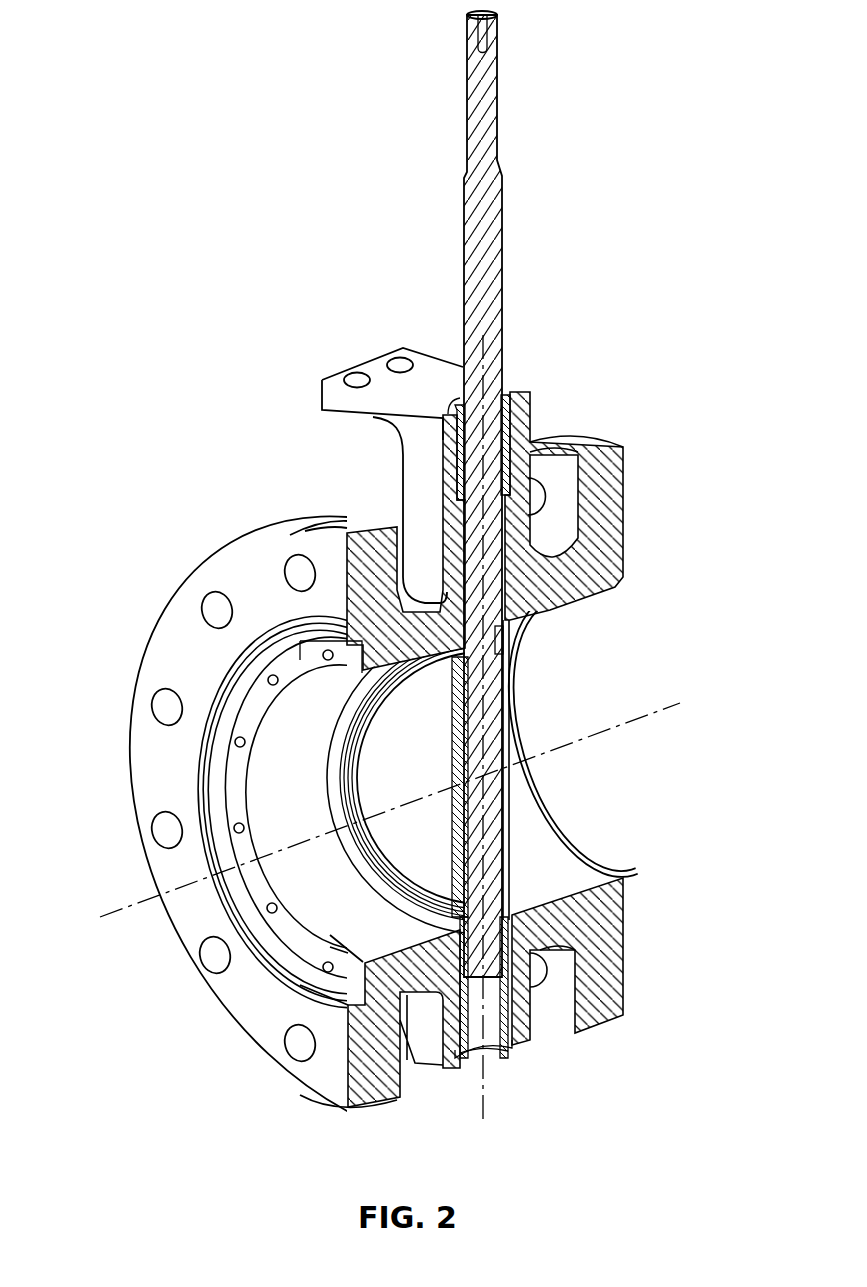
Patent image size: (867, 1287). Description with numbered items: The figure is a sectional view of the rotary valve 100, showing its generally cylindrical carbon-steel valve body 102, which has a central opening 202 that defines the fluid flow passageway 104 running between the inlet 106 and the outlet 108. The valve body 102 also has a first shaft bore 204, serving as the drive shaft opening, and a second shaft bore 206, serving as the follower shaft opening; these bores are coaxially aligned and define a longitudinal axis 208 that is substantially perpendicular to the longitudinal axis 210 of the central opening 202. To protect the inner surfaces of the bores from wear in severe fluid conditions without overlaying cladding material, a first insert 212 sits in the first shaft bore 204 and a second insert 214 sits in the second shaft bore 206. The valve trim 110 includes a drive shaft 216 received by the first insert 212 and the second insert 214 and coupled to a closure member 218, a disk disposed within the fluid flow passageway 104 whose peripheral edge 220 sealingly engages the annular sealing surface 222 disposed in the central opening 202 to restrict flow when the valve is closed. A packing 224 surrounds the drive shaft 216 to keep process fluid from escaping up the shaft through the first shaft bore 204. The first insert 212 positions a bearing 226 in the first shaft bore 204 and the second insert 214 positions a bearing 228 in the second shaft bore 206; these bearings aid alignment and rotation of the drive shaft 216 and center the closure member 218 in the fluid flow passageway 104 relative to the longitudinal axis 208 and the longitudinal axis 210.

The rotary valve 100 is at (272, 108).
The valve body 102 is at (608, 522).
The fluid flow passageway 104 is at (265, 803).
The inlet 106 is at (550, 828).
The outlet 108 is at (232, 705).
The valve trim 110 is at (532, 690).
The central opening 202 is at (378, 965).
The first shaft bore 204 is at (455, 400).
The second shaft bore 206 is at (498, 1043).
The longitudinal axis 208 is at (483, 1107).
The longitudinal axis of the central opening 210 is at (675, 707).
The first insert 212 is at (460, 512).
The second insert 214 is at (517, 1017).
The drive shaft 216 is at (495, 240).
The closure member 218 is at (365, 808).
The peripheral edge 220 is at (443, 933).
The annular sealing surface 222 is at (380, 950).
The packing 224 is at (505, 432).
The bearing 226 is at (512, 628).
The bearing 228 is at (512, 910).